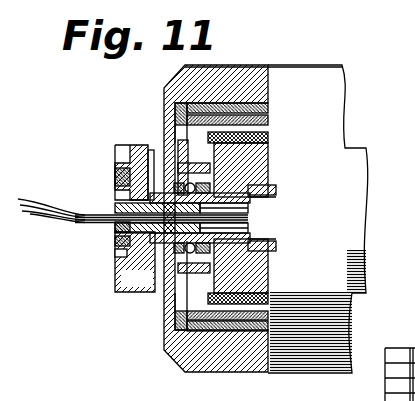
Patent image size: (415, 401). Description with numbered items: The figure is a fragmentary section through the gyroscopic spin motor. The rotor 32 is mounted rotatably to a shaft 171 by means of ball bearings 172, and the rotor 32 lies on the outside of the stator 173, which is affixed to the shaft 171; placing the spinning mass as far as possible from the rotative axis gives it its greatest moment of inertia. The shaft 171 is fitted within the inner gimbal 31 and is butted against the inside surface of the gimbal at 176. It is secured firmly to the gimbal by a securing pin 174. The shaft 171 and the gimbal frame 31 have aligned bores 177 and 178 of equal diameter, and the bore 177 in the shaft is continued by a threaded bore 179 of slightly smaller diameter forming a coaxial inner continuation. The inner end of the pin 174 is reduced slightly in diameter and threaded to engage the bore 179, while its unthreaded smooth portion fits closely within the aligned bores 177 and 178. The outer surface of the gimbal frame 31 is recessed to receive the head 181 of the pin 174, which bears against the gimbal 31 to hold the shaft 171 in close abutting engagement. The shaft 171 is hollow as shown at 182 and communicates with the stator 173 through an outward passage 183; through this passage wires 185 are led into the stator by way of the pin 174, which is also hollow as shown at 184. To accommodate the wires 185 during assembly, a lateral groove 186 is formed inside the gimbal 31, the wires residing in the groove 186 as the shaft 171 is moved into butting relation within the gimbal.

The inner gimbal 31 is at (115, 276).
The rotor 32 is at (310, 76).
The shaft 171 is at (265, 212).
The ball bearings 172 is at (190, 183).
The stator 173 is at (256, 160).
The securing pin 174 is at (115, 241).
The butting point 176 is at (115, 228).
The bore in the shaft 177 is at (268, 228).
The bore in the gimbal frame 178 is at (115, 206).
The threaded bore 179 is at (115, 198).
The head of the pin 181 is at (115, 254).
The hollow of the shaft 182 is at (250, 212).
The outward passage 183 is at (270, 177).
The hollow of the pin 184 is at (137, 279).
The wires 185 is at (22, 201).
The lateral groove 186 is at (115, 161).